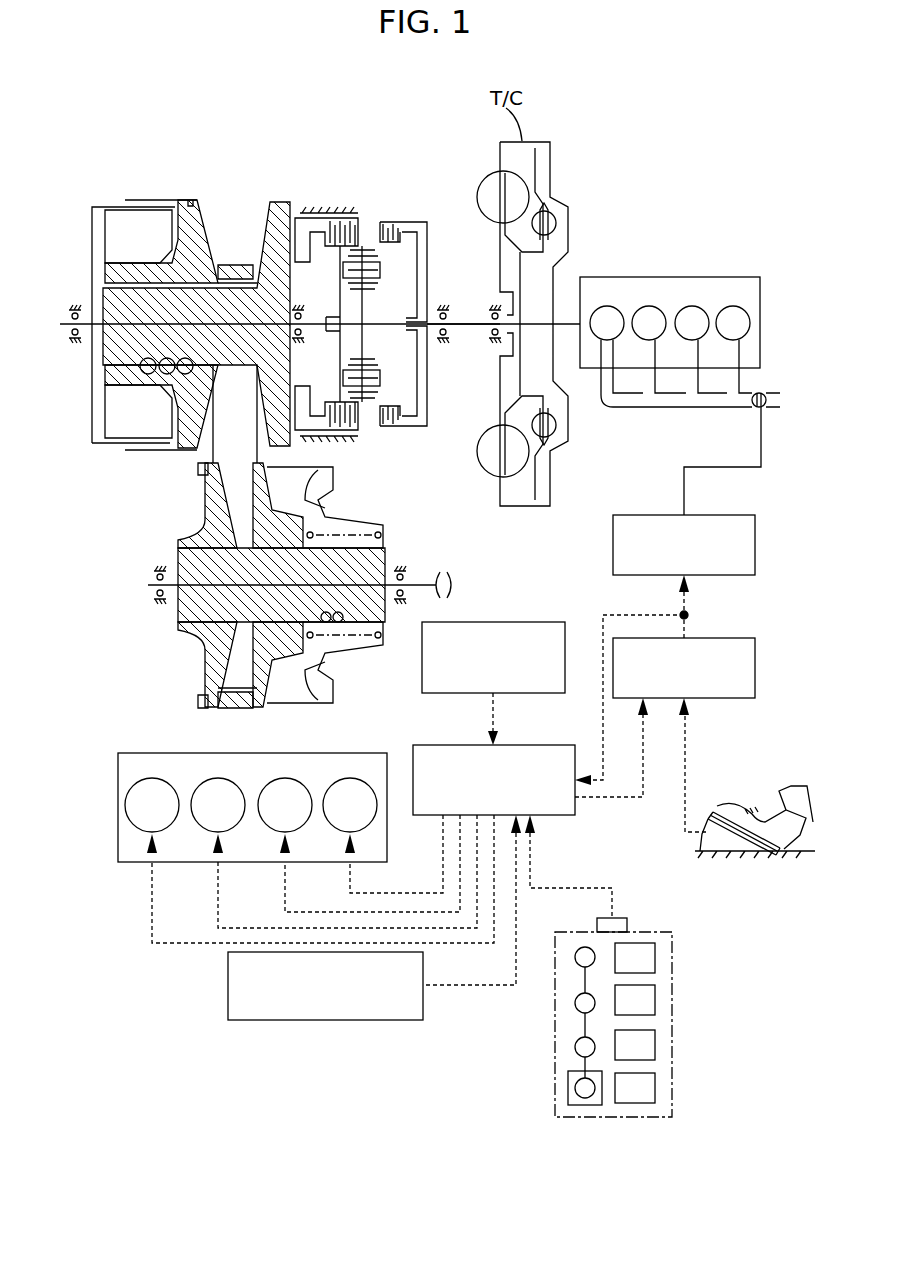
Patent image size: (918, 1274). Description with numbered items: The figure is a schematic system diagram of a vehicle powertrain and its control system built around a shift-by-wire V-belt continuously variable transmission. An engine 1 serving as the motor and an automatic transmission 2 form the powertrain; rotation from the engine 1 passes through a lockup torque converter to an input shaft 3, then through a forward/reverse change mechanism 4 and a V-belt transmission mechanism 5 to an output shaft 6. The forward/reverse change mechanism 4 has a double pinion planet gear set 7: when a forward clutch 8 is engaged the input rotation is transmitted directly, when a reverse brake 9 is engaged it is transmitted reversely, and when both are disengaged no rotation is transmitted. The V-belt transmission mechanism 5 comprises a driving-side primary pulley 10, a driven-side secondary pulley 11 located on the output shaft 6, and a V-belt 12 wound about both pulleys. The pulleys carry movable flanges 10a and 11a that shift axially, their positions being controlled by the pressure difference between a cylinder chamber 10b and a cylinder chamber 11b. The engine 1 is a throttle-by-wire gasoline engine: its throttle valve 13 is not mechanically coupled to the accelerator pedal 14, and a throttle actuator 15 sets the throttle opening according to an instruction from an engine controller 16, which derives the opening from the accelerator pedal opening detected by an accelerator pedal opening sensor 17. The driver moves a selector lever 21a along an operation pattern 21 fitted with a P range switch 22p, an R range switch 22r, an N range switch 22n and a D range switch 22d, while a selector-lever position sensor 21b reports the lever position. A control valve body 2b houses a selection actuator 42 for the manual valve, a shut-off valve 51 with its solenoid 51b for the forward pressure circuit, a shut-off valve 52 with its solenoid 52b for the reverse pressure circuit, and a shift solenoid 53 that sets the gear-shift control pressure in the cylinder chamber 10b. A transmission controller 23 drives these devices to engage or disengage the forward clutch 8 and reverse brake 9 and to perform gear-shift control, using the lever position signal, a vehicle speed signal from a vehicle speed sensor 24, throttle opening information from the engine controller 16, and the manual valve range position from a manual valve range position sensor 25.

The engine 1 is at (672, 277).
The automatic transmission 2 is at (412, 110).
The control valve body 2b is at (118, 786).
The input shaft 3 is at (469, 320).
The forward/reverse change mechanism 4 is at (371, 200).
The V-belt transmission mechanism 5 is at (215, 195).
The output shaft 6 is at (422, 584).
The double pinion planet gear set 7 is at (392, 383).
The forward clutch 8 is at (390, 214).
The reverse brake 9 is at (340, 212).
The primary pulley 10 is at (272, 202).
The flange 10a is at (208, 206).
The cylinder chamber 10b is at (125, 220).
The secondary pulley 11 is at (200, 686).
The flange 11a is at (262, 708).
The cylinder chamber 11b is at (290, 693).
The V-belt 12 is at (236, 262).
The throttle valve 13 is at (752, 404).
The accelerator pedal 14 is at (731, 808).
The throttle actuator 15 is at (730, 514).
The engine controller 16 is at (755, 656).
The accelerator pedal opening sensor 17 is at (698, 848).
The operation pattern 21 is at (650, 928).
The selector lever 21a is at (568, 1079).
The selector-lever position sensor 21b is at (597, 925).
The P range switch 22p is at (655, 955).
The R range switch 22r is at (655, 998).
The N range switch 22n is at (655, 1043).
The D range switch 22d is at (655, 1088).
The transmission controller 23 is at (553, 745).
The vehicle speed sensor 24 is at (543, 621).
The manual valve range position sensor 25 is at (228, 978).
The selection actuator 42 is at (368, 831).
The shut-off valve 51 is at (204, 851).
The solenoid 51b is at (200, 831).
The shut-off valve 52 is at (115, 837).
The solenoid 52b is at (135, 831).
The shift solenoid 53 is at (302, 831).